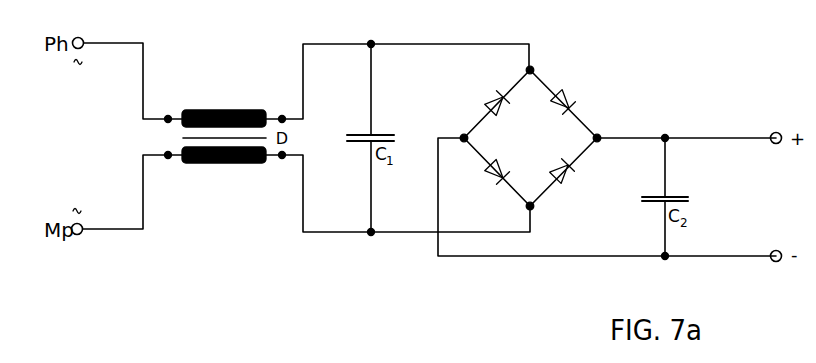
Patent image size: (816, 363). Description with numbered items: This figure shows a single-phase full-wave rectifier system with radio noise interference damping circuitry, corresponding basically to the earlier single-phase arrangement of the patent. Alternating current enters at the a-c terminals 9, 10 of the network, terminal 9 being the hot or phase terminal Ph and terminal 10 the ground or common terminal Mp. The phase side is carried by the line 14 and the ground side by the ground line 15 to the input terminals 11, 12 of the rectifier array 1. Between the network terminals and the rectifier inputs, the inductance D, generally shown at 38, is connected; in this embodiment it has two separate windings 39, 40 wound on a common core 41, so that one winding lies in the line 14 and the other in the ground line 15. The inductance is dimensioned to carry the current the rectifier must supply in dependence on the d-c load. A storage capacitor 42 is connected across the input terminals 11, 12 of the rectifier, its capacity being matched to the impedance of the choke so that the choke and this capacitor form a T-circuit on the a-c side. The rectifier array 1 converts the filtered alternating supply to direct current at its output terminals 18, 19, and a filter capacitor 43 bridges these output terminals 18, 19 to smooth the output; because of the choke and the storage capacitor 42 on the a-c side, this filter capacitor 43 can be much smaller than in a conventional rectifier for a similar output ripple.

The rectifier array 1 is at (583, 91).
The a-c terminal 9 is at (79, 37).
The a-c terminal 10 is at (78, 235).
The input terminal 11 is at (531, 66).
The input terminal 12 is at (533, 211).
The line 14 is at (146, 56).
The ground line 15 is at (145, 210).
The output terminal 18 is at (598, 135).
The output terminal 19 is at (462, 139).
The inductance 38 is at (212, 125).
The winding 39 is at (212, 110).
The winding 40 is at (216, 163).
The common core 41 is at (184, 138).
The capacitor C1 42 is at (380, 133).
The filter capacitor C2 43 is at (672, 197).